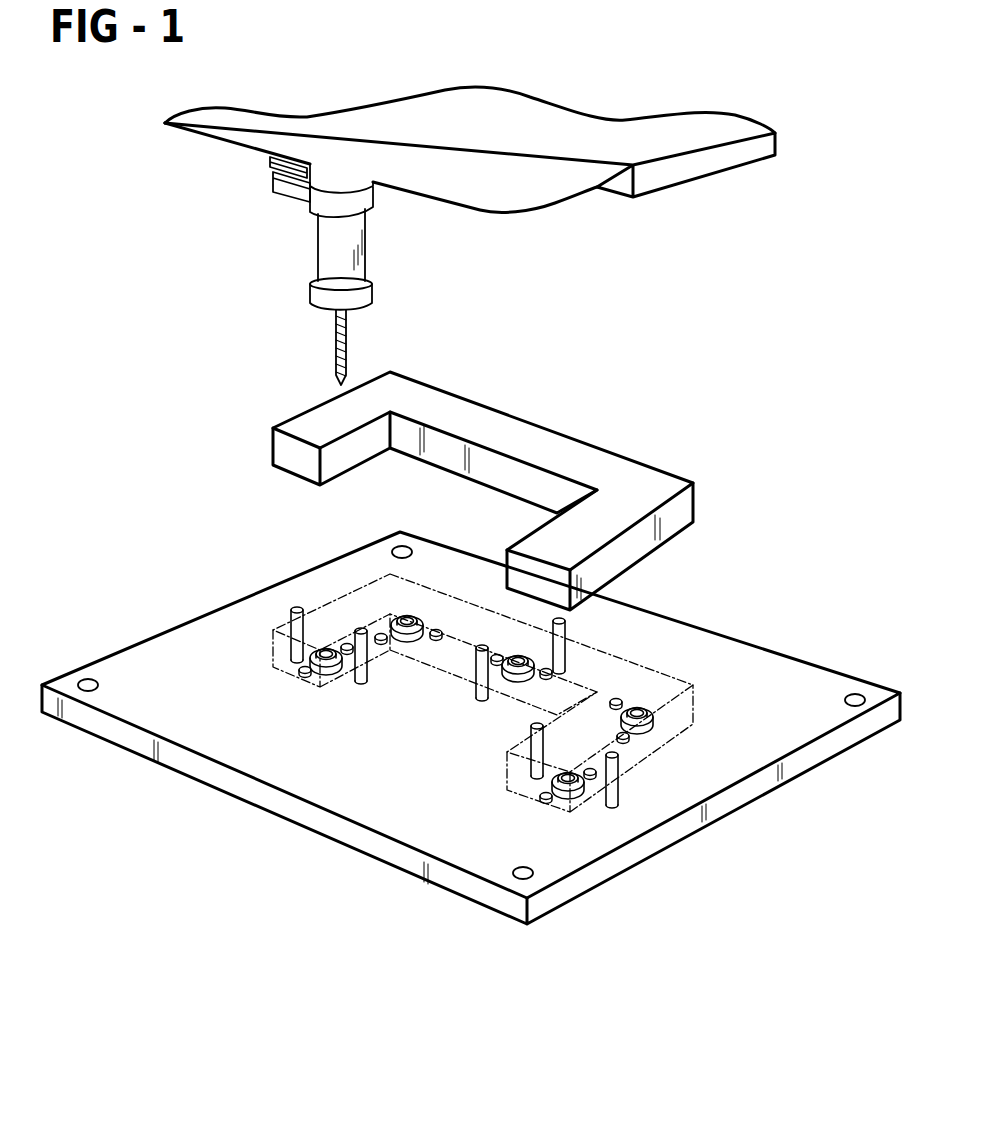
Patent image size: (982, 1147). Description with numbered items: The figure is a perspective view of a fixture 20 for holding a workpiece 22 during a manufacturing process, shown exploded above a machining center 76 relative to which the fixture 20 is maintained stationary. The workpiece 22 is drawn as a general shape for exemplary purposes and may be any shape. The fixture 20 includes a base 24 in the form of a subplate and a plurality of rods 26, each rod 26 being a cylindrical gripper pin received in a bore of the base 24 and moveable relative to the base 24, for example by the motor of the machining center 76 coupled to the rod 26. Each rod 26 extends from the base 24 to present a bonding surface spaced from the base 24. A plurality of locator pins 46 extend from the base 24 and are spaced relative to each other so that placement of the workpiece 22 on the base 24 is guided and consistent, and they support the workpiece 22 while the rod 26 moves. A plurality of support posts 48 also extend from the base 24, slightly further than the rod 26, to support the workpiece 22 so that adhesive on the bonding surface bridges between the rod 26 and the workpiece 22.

The fixture 20 is at (471, 747).
The workpiece 22 is at (622, 467).
The base 24 is at (263, 763).
The rod 26 is at (647, 705).
The locator pin 46 is at (508, 747).
The support post 48 is at (587, 767).
The machining center 76 is at (683, 187).